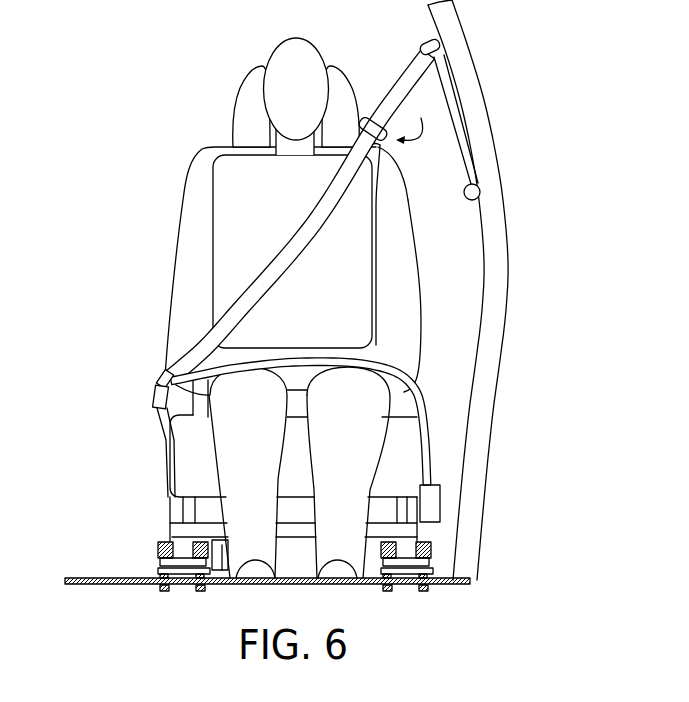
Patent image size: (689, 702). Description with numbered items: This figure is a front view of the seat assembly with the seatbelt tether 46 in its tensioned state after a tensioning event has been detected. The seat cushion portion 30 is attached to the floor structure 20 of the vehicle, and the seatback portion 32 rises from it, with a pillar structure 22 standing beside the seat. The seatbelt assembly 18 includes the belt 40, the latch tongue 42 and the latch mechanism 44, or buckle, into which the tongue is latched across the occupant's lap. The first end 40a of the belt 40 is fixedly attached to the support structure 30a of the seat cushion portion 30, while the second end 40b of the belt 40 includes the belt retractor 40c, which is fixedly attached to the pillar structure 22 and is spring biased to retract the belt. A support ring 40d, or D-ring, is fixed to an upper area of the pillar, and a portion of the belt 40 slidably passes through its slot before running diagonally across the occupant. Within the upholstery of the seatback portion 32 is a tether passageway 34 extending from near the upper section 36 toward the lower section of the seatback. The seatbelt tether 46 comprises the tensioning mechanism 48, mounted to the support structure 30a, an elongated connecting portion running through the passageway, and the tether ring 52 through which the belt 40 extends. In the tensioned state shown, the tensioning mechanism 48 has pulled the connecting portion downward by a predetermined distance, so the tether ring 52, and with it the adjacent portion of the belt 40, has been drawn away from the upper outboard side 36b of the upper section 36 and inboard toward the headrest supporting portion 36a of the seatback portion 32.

The seatbelt assembly 18 is at (271, 249).
The floor structure 20 is at (108, 578).
The pillar structure 22 is at (505, 336).
The seat cushion portion 30 is at (400, 441).
The support structure 30a is at (435, 556).
The seatback portion 32 is at (193, 243).
The tether passageway 34 is at (386, 152).
The upper section 36 is at (230, 142).
The headrest supporting portion 36a is at (348, 100).
The upper outboard side 36b is at (403, 181).
The belt 40 is at (324, 220).
The first end 40a is at (433, 482).
The second end 40b is at (461, 132).
The belt retractor 40c is at (479, 187).
The support ring 40d is at (421, 41).
The latch tongue 42 is at (160, 374).
The latch mechanism 44 is at (154, 396).
The seatbelt tether 46 is at (416, 120).
The tensioning mechanism 48 is at (223, 565).
The tether ring 52 is at (366, 120).